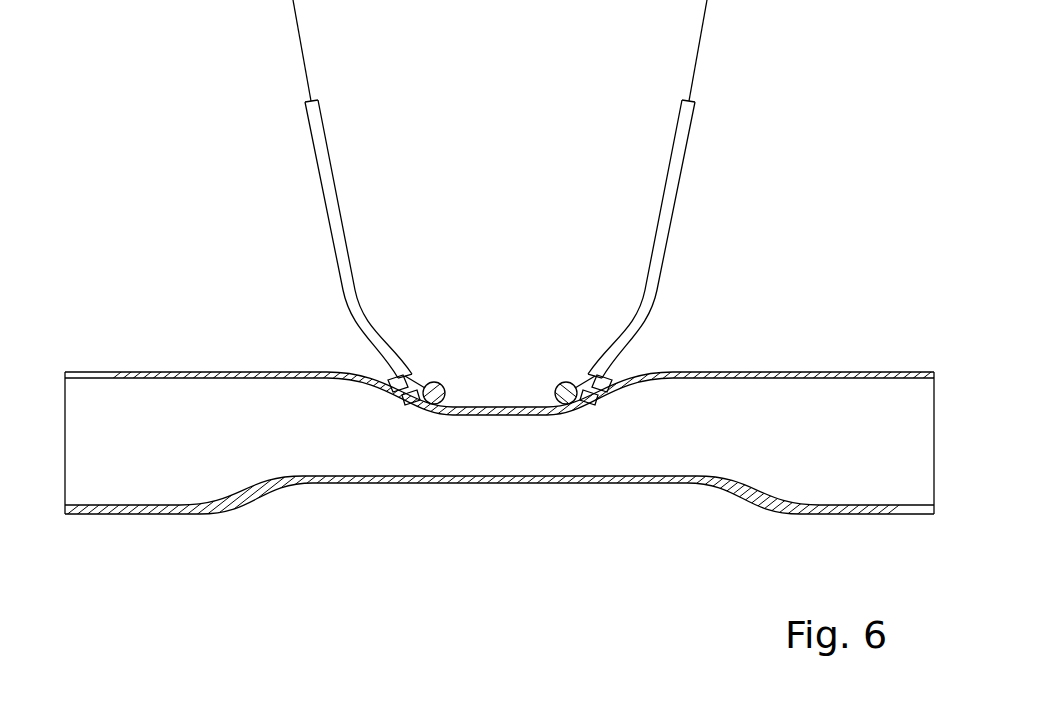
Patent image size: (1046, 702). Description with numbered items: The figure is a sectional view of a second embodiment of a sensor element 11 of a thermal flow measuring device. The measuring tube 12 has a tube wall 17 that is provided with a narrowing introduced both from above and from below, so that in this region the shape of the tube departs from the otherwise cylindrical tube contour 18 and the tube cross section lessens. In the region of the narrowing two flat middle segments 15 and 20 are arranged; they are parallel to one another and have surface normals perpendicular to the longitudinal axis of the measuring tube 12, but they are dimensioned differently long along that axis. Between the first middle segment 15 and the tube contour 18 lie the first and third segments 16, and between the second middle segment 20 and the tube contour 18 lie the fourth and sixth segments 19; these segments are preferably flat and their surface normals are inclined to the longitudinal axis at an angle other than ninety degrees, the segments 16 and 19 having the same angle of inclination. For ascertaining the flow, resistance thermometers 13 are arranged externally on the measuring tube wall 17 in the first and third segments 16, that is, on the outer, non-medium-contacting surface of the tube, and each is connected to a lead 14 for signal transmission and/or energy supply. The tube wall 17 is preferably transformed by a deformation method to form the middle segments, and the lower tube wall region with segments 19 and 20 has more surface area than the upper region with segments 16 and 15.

The sensor element 11 is at (491, 267).
The measuring tube 12 is at (845, 402).
The resistance thermometer 13 is at (398, 392).
The lead for signal transmission and/or energy supply 14 is at (664, 220).
The first middle segment 15 is at (500, 413).
The first and third segment 16 is at (423, 402).
The tube wall 17 is at (220, 378).
The tube contour 18 is at (861, 505).
The fourth and sixth segment 19 is at (741, 489).
The second middle segment 20 is at (642, 477).